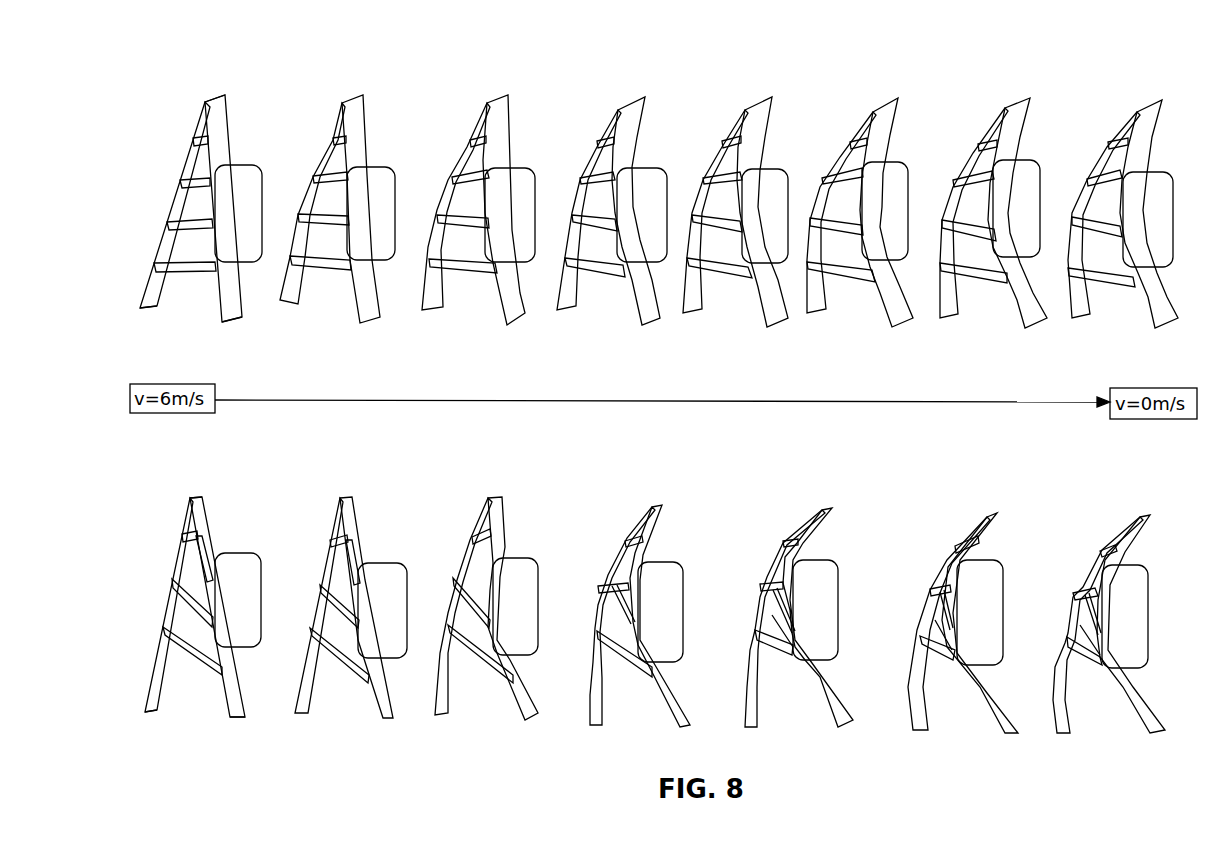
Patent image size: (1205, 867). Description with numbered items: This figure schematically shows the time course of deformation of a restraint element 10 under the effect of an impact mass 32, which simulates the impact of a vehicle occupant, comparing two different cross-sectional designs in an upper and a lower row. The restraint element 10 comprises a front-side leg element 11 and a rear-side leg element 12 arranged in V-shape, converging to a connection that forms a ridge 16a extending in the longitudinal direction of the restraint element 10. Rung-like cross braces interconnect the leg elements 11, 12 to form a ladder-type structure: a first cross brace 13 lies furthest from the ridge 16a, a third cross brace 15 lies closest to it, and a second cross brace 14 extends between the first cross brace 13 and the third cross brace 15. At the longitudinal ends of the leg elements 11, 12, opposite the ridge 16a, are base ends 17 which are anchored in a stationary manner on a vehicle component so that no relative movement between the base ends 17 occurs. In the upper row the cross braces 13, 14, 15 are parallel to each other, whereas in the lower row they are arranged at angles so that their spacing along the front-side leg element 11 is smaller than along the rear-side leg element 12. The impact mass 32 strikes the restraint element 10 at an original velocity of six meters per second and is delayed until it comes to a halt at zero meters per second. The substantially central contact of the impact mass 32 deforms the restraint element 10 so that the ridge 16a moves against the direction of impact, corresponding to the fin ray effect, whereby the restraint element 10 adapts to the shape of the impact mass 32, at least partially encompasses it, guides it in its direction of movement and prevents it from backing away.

The restraint element 10 is at (181, 110).
The front-side leg element 11 is at (216, 131).
The rear-side leg element 12 is at (170, 206).
The first cross brace 13 is at (197, 272).
The second cross brace 14 is at (200, 230).
The third cross brace 15 is at (198, 178).
The ridge 16a is at (214, 98).
The base ends 17 is at (150, 308).
The impact mass 32 is at (245, 190).